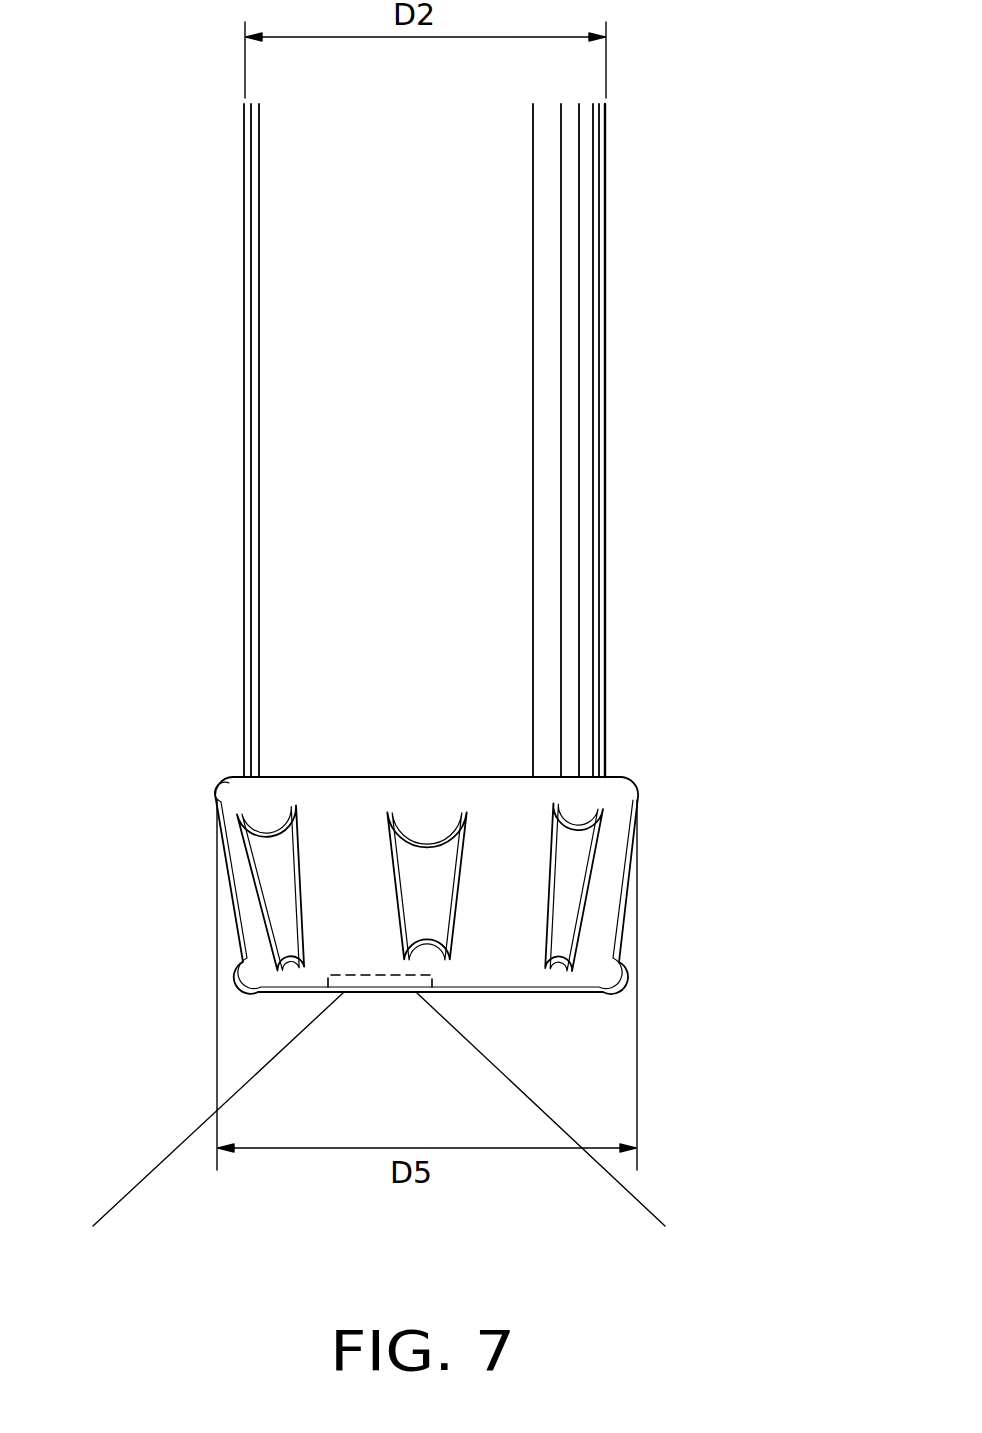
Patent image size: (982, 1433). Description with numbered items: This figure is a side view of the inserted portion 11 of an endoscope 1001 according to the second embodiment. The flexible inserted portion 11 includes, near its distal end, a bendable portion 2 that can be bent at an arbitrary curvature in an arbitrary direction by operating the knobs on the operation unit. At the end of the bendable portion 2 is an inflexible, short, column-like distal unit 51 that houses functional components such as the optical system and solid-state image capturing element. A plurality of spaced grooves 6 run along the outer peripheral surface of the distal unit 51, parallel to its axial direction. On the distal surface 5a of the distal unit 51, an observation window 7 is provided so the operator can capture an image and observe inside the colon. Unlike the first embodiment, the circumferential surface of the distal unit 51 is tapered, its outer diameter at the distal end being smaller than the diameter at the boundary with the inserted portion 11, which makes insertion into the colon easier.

The endoscope 1001 is at (690, 302).
The bendable portion 2 is at (270, 508).
The inserted portion 11 is at (618, 530).
The grooves 6 is at (420, 850).
The distal unit 51 is at (255, 948).
The observation window 7 is at (387, 993).
The distal surface 5a is at (512, 993).